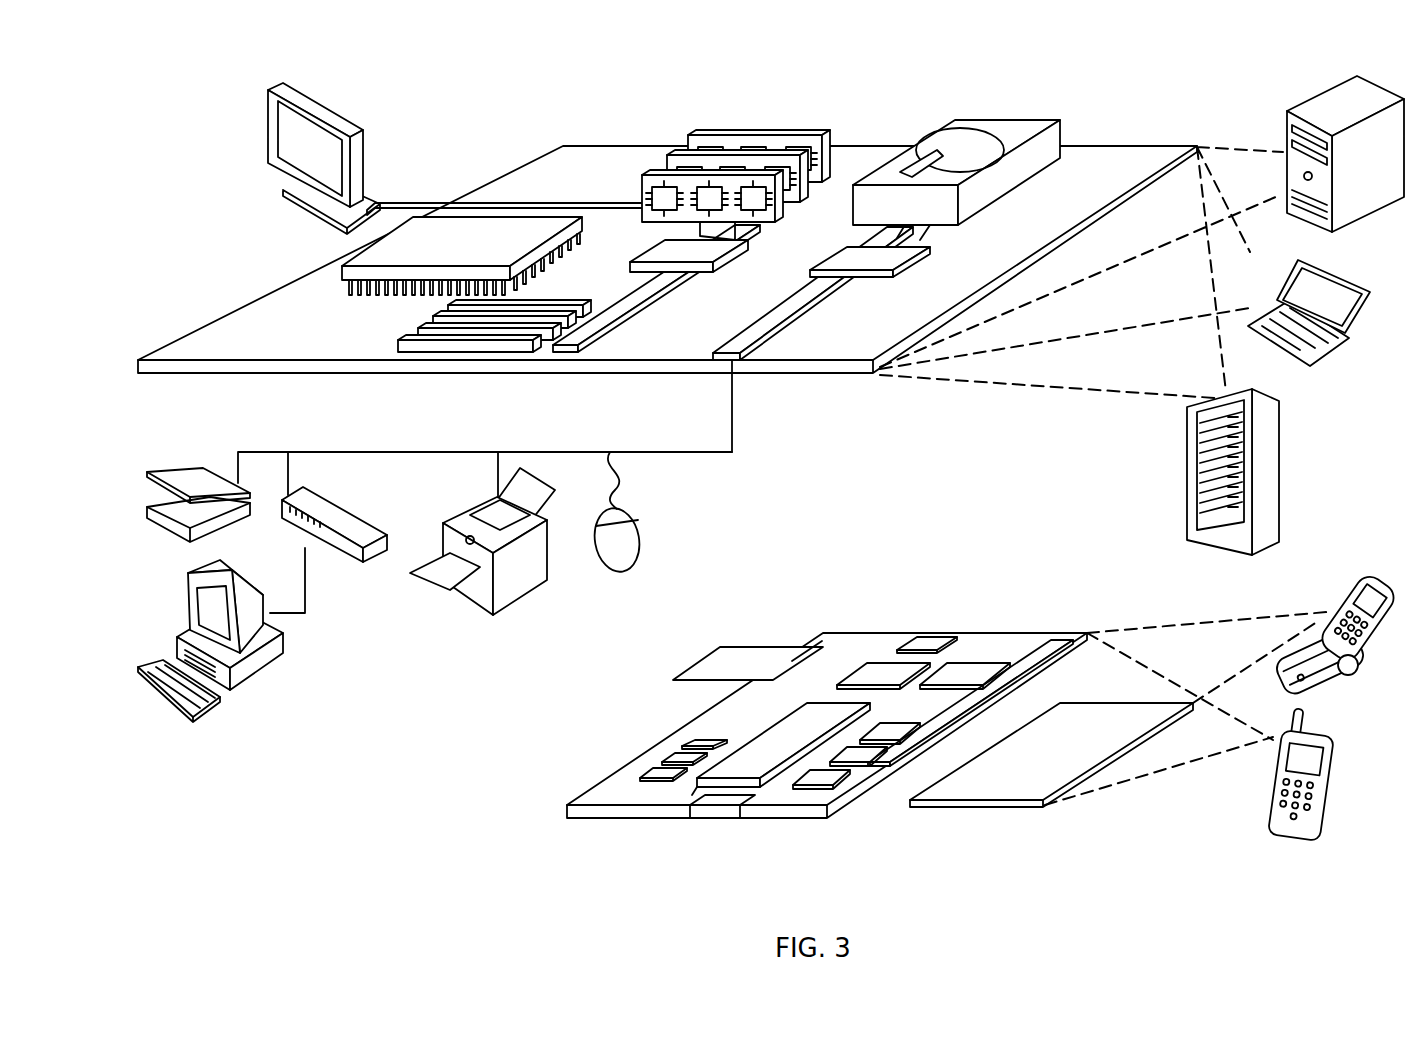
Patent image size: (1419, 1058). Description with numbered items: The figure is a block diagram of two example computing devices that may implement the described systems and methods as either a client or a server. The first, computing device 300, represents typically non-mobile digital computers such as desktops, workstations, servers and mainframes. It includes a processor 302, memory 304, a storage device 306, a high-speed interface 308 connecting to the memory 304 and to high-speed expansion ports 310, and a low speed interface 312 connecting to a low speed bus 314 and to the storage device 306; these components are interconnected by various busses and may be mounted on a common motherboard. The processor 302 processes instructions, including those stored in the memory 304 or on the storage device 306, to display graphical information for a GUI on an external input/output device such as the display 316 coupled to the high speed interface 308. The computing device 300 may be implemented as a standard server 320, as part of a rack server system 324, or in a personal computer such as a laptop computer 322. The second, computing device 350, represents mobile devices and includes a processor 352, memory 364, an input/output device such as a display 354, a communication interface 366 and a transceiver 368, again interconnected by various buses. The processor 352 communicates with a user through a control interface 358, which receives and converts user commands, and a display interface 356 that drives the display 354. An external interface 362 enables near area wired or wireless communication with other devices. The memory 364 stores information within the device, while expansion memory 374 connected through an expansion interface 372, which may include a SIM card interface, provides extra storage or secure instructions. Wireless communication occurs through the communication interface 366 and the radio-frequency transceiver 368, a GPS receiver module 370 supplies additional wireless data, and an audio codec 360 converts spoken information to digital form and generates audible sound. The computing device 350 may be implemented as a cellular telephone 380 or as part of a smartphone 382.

The computing device 300 is at (480, 100).
The processor 302 is at (342, 267).
The memory 304 is at (694, 131).
The storage device 306 is at (939, 119).
The high-speed interface 308 is at (667, 253).
The high-speed expansion ports 310 is at (445, 333).
The low speed interface 312 is at (850, 250).
The low speed bus 314 is at (740, 365).
The display 316 is at (276, 88).
The standard server 320 is at (1287, 124).
The laptop computer 322 is at (1358, 280).
The rack server system 324 is at (1187, 489).
The computing device 350 is at (542, 815).
The processor 352 is at (753, 770).
The display 354 is at (1011, 800).
The display interface 356 is at (834, 788).
The control interface 358 is at (864, 762).
The audio codec 360 is at (891, 742).
The external interface 362 is at (714, 808).
The memory 364 is at (668, 763).
The communication interface 366 is at (883, 672).
The transceiver 368 is at (961, 669).
The GPS receiver module 370 is at (936, 630).
The expansion interface 372 is at (800, 649).
The expansion memory 374 is at (718, 649).
The cellular telephone 380 is at (1333, 582).
The smartphone 382 is at (1271, 788).